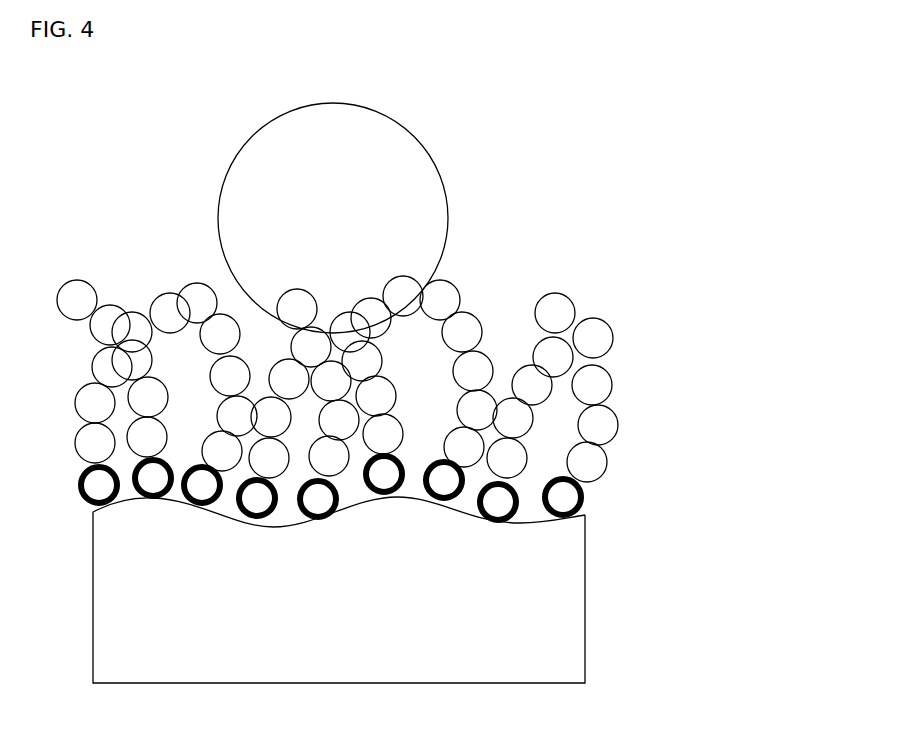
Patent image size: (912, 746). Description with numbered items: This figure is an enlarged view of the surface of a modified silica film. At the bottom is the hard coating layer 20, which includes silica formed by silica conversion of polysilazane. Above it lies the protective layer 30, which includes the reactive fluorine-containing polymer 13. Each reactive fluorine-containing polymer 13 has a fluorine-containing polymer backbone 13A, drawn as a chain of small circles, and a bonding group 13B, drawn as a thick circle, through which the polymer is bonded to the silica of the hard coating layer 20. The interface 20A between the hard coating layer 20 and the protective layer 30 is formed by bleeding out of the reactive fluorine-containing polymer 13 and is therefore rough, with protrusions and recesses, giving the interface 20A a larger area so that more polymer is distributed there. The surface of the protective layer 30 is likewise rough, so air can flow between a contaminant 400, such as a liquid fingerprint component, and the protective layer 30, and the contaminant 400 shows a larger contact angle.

The contaminant 400 is at (442, 183).
The protective layer 30 is at (755, 402).
The reactive fluorine-containing polymer 13 is at (628, 383).
The fluorine-containing polymer backbone 13A is at (603, 420).
The bonding group 13B is at (573, 497).
The hard coating layer 20 is at (570, 595).
The interface 20A is at (537, 523).